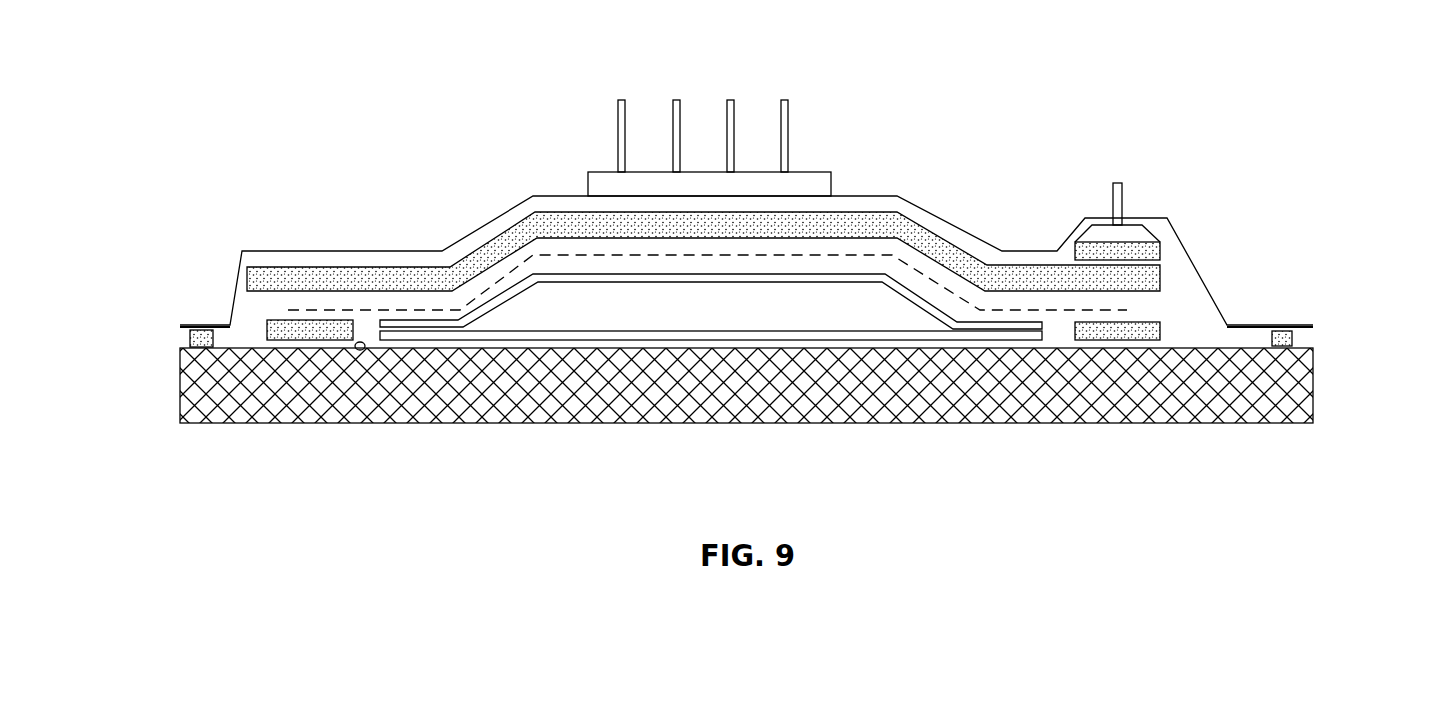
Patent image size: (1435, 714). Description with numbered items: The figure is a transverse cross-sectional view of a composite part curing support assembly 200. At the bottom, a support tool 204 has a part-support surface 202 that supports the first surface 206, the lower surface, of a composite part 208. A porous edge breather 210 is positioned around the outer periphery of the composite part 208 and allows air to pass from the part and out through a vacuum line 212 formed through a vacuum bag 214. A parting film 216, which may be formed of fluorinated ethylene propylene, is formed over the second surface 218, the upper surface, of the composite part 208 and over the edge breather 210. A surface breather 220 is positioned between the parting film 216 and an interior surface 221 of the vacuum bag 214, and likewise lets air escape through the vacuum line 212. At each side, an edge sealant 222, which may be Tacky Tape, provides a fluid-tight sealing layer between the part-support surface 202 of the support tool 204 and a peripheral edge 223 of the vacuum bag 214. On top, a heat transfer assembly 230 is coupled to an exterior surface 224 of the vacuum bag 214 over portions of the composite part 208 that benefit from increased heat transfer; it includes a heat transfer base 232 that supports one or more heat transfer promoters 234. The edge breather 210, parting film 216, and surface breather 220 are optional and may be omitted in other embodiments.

The composite part curing support assembly 200 is at (193, 118).
The part-support surface 202 is at (357, 350).
The support tool 204 is at (818, 385).
The first surface 206 is at (522, 341).
The composite part 208 is at (655, 308).
The porous edge breather 210 is at (303, 333).
The vacuum line 212 is at (1123, 197).
The vacuum bag 214 is at (928, 213).
The parting film 216 is at (373, 310).
The second surface 218 is at (570, 275).
The surface breather 220 is at (577, 212).
The interior surface 221 is at (468, 234).
The edge sealant 222 is at (205, 348).
The peripheral edge 223 is at (198, 325).
The exterior surface 224 is at (858, 194).
The heat transfer assembly 230 is at (746, 119).
The heat transfer base 232 is at (657, 178).
The heat transfer promoters 234 is at (732, 110).